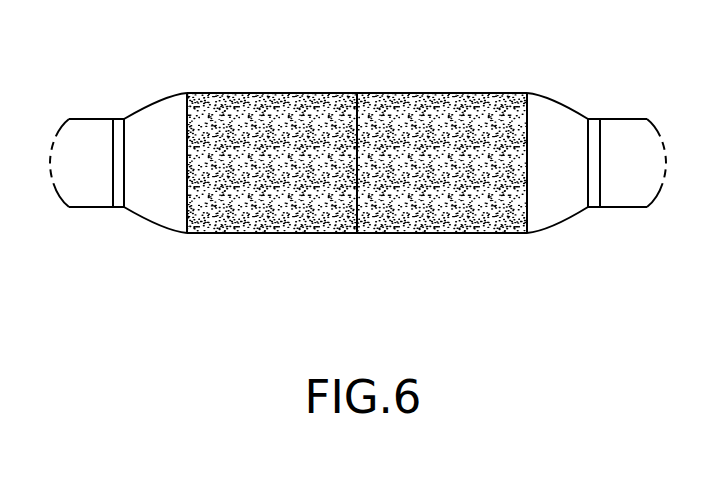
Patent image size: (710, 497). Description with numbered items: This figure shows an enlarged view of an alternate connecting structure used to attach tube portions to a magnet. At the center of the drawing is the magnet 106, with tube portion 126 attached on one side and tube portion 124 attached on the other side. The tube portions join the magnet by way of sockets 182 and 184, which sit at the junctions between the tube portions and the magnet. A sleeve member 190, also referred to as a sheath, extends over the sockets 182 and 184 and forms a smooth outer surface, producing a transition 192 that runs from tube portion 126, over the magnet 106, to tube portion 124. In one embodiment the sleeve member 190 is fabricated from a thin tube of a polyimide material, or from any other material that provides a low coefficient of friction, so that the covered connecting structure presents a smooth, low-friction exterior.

The magnet 106 is at (275, 120).
The tube portion 124 is at (625, 122).
The tube portion 126 is at (83, 130).
The socket 182 is at (172, 213).
The socket 184 is at (558, 212).
The sleeve member 190 is at (252, 262).
The transition 192 is at (362, 262).